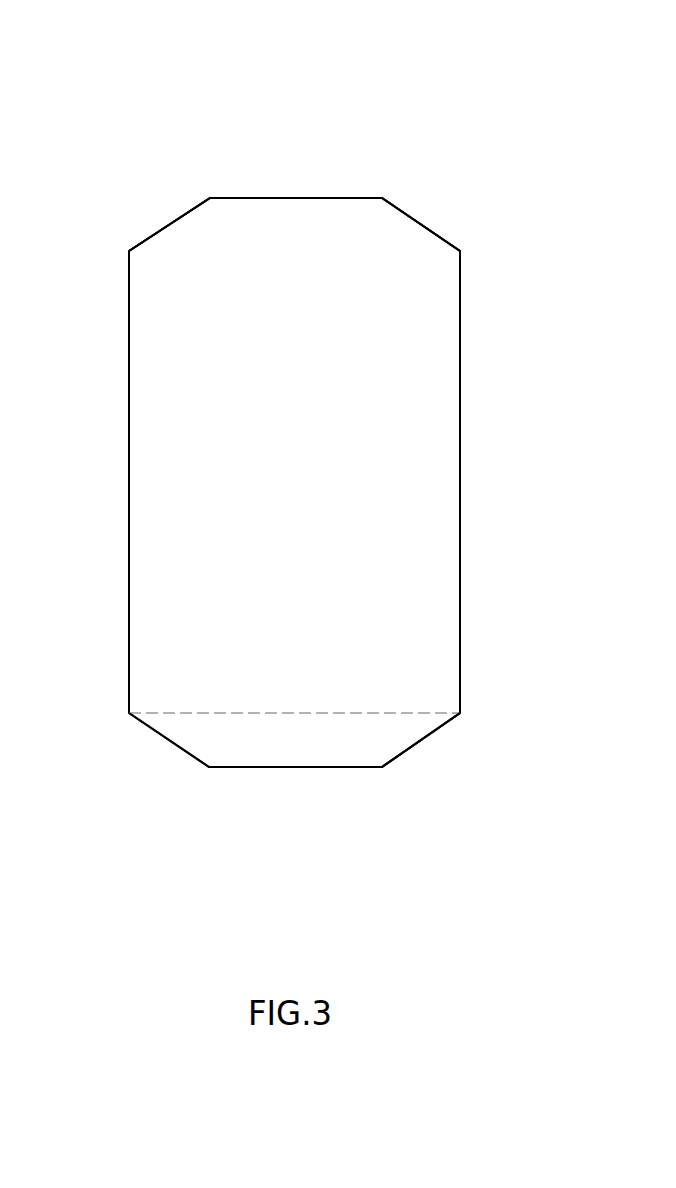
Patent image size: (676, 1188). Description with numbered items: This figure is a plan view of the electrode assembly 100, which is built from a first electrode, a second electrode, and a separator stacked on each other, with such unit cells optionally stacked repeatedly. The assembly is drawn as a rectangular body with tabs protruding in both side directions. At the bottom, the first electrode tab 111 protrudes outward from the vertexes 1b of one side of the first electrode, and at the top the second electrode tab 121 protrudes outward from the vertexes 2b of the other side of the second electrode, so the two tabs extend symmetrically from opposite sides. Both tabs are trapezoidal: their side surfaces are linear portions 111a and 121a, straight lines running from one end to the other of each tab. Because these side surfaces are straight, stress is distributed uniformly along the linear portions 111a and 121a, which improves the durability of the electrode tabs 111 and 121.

The electrode assembly 100 is at (372, 124).
The first electrode tab 111 is at (299, 757).
The linear portion 111a is at (423, 740).
The vertex 1b is at (460, 713).
The second electrode tab 121 is at (400, 230).
The linear portion 121a is at (438, 237).
The vertex 2b is at (129, 251).